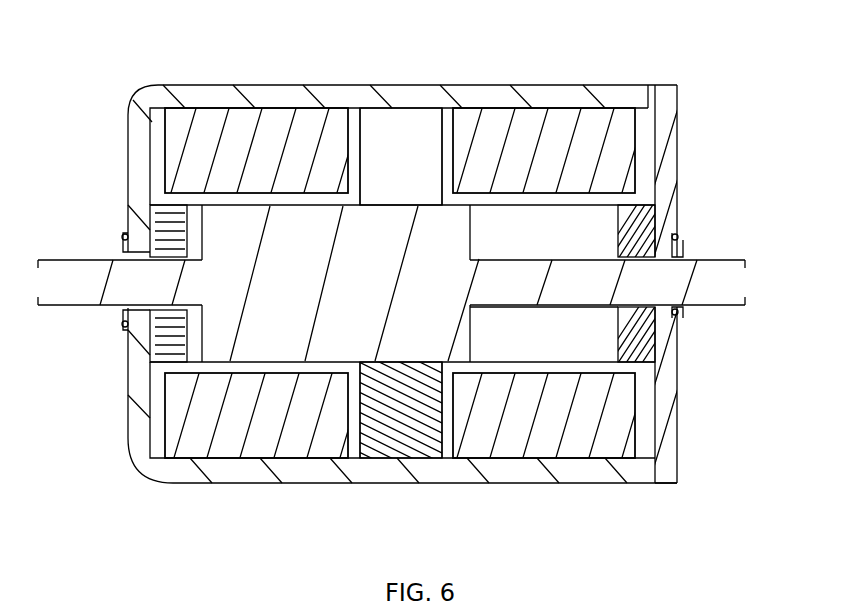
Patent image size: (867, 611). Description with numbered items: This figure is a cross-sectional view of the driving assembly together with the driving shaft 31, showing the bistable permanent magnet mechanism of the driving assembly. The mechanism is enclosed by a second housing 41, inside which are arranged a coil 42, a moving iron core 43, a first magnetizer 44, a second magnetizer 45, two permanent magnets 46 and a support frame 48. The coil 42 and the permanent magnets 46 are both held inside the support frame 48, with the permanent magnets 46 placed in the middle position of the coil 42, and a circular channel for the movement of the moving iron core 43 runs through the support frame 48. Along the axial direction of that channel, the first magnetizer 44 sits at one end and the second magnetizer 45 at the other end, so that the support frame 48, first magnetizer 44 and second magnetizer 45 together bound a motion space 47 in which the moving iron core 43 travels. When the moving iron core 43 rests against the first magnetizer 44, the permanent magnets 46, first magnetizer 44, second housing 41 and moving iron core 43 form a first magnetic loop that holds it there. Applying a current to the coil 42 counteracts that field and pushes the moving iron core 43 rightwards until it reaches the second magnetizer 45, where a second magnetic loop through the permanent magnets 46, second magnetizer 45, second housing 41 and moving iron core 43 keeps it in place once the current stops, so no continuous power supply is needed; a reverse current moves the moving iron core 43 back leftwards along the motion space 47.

The driving shaft 31 is at (72, 285).
The second housing 41 is at (472, 94).
The coil 42 is at (282, 138).
The moving iron core 43 is at (334, 320).
The first magnetizer 44 is at (163, 236).
The second magnetizer 45 is at (632, 245).
The permanent magnet 46 is at (395, 135).
The motion space 47 is at (533, 342).
The support frame 48 is at (640, 157).